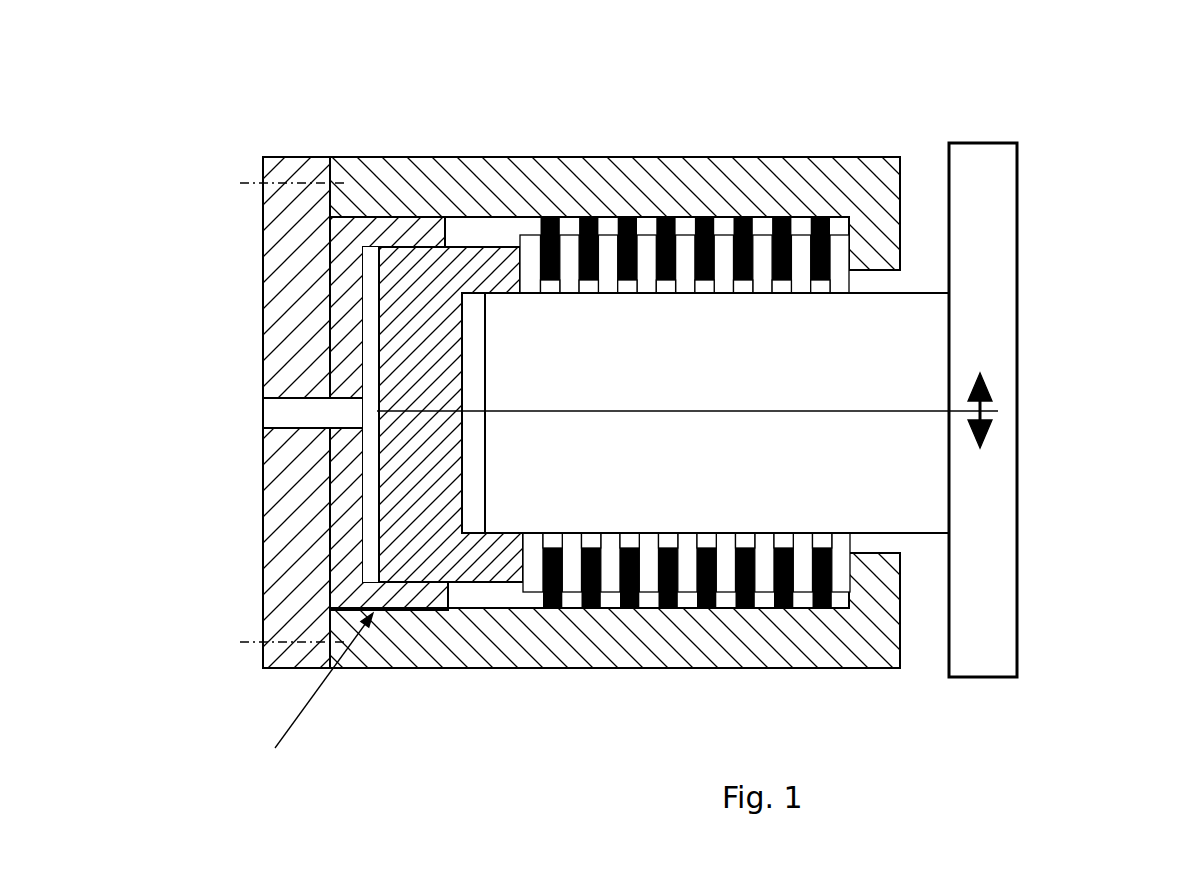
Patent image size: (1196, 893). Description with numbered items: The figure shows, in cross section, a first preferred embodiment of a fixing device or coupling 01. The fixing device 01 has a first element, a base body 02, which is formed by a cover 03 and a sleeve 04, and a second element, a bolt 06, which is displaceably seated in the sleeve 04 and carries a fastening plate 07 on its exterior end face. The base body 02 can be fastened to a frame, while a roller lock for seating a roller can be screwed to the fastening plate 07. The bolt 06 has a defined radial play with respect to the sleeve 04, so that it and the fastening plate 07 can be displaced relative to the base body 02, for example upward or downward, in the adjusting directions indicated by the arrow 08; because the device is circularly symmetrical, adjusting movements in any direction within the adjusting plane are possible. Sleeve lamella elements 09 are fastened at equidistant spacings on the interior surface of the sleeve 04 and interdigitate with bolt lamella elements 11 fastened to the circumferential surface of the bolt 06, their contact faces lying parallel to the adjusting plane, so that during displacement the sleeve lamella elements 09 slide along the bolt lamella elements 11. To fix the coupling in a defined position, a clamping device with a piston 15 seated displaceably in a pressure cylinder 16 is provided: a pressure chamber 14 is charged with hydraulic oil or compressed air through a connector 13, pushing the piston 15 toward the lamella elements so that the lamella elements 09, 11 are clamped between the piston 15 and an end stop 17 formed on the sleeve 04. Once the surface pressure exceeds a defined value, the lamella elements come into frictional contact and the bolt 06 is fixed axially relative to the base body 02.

The fixing device 01 is at (665, 389).
The base body 02 is at (437, 125).
The cover 03 is at (297, 182).
The sleeve 04 is at (604, 175).
The bolt 06 is at (866, 317).
The fastening plate 07 is at (998, 482).
The arrow 08 is at (985, 402).
The sleeve lamella elements 09 is at (628, 608).
The bolt lamella elements 11 is at (723, 575).
The connector 13 is at (283, 417).
The pressure chamber 14 is at (375, 332).
The piston 15 is at (422, 557).
The pressure cylinder 16 is at (352, 562).
The end stop 17 is at (885, 595).